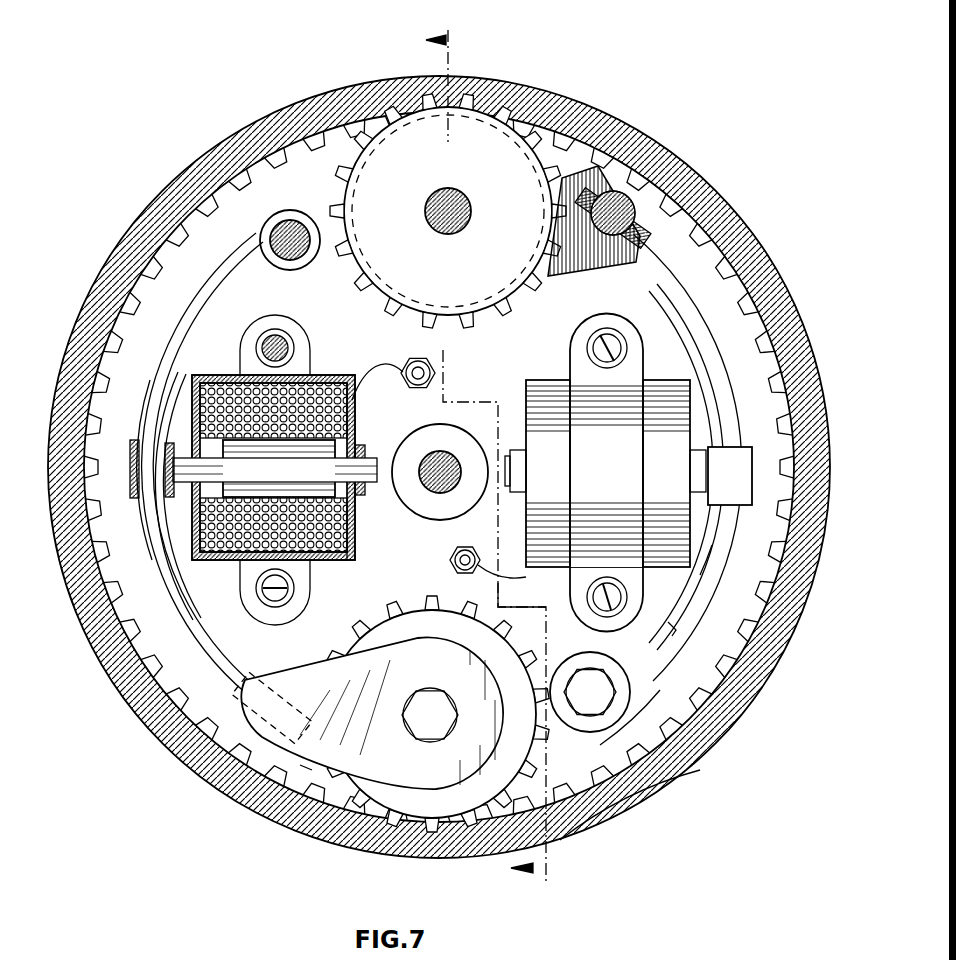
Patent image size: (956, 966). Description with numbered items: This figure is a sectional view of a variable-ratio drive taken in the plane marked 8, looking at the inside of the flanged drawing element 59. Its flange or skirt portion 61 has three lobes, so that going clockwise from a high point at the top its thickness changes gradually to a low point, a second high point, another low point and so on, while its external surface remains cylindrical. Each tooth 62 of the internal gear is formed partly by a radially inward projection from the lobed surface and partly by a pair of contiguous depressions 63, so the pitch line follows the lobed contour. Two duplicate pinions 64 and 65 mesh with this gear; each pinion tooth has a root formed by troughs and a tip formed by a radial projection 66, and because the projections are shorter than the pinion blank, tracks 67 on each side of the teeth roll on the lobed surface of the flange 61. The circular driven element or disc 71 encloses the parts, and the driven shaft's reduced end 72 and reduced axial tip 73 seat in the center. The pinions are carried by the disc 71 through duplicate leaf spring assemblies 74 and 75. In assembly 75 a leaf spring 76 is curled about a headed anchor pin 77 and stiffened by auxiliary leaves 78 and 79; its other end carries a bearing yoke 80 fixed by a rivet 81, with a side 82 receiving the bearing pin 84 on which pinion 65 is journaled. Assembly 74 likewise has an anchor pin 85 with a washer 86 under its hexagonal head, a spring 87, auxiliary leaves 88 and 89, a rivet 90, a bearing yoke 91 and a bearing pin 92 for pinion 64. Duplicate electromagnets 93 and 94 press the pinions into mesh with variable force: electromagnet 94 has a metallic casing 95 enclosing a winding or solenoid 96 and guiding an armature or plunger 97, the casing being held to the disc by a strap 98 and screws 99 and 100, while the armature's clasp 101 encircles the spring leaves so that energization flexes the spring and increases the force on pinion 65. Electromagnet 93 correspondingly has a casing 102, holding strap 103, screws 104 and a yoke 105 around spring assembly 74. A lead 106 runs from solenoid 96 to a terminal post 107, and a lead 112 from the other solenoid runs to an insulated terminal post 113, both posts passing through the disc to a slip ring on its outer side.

The flanged drawing element 59 is at (705, 770).
The flange or skirt portion 61 is at (482, 90).
The tooth of the internal gear 62 is at (283, 160).
The depressions or troughs 63 is at (712, 210).
The pinion 64 is at (420, 150).
The pinion 65 is at (415, 820).
The radial projection 66 is at (522, 298).
The tracks 67 is at (372, 300).
The driven element or disc 71 is at (640, 795).
The reduced end 72 is at (420, 500).
The reduced axial tip 73 is at (438, 465).
The leaf spring assembly 74 is at (700, 297).
The leaf spring assembly 75 is at (195, 664).
The leaf spring 76 is at (258, 258).
The headed anchor pin 77 is at (300, 250).
The auxiliary leaf 78 is at (148, 490).
The auxiliary leaf 79 is at (185, 555).
The bearing yoke 80 is at (312, 770).
The rivet 81 is at (288, 720).
The side of the yoke 82 is at (372, 713).
The bearing pin 84 is at (428, 728).
The anchor pin 85 is at (588, 712).
The washer 86 is at (624, 698).
The spring 87 is at (672, 660).
The auxiliary leaf 88 is at (672, 628).
The auxiliary leaf 89 is at (700, 572).
The rivet 90 is at (615, 258).
The bearing yoke 91 is at (592, 195).
The bearing pin 92 is at (455, 200).
The electromagnet 93 is at (548, 575).
The electromagnet 94 is at (340, 565).
The metallic casing 95 is at (356, 405).
The winding or solenoid 96 is at (228, 395).
The armature or plunger 97 is at (271, 468).
The strap 98 is at (258, 612).
The screw 99 is at (276, 335).
The screw 100 is at (278, 602).
The yoke or clasp 101 is at (130, 450).
The casing 102 is at (555, 415).
The holding strap 103 is at (640, 410).
The screws 104 is at (607, 340).
The yoke 105 is at (730, 476).
The lead 106 is at (380, 360).
The terminal post 107 is at (432, 375).
The lead 112 is at (495, 572).
The insulated terminal post 113 is at (452, 560).
The section line 8- 8 is at (499, 460).